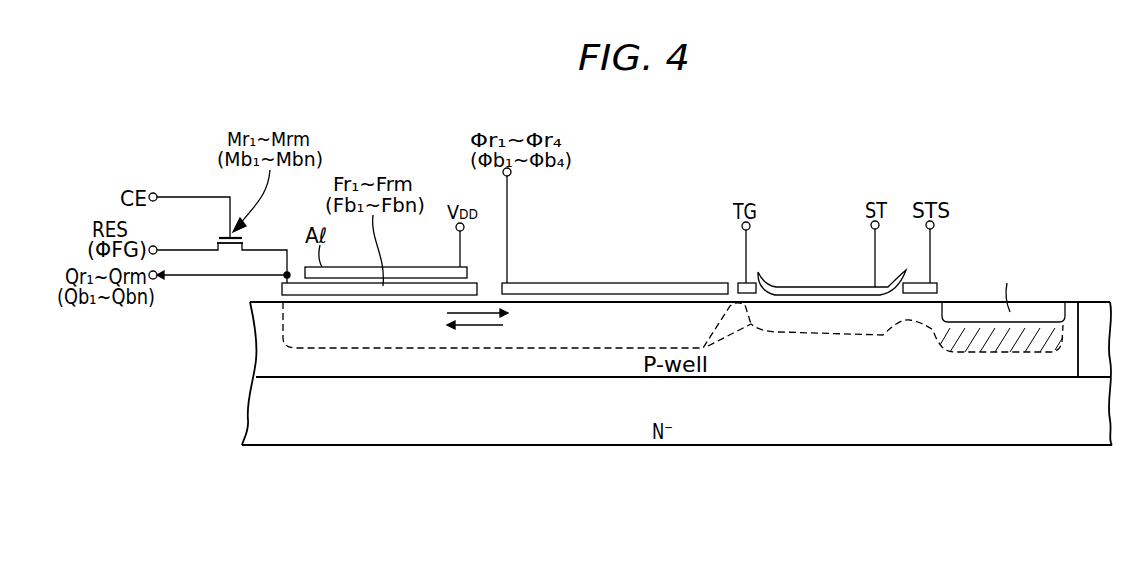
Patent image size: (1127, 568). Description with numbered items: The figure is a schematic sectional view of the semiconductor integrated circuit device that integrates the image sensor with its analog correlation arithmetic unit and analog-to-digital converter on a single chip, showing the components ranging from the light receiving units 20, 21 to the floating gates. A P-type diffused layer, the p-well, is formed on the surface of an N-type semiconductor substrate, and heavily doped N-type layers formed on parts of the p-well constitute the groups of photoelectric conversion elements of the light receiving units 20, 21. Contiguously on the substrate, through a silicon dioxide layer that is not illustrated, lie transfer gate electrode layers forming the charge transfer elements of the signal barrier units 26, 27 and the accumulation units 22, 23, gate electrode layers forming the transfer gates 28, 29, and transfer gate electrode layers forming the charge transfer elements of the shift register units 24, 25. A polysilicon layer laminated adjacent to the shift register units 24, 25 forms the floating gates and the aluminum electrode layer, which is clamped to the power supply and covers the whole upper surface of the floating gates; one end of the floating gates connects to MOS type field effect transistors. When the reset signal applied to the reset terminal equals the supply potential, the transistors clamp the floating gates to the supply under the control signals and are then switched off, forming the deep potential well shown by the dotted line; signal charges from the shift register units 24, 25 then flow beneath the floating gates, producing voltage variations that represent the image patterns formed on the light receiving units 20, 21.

The light receiving unit 20 is at (1022, 280).
The light receiving unit 21 is at (1051, 301).
The accumulation unit 22 is at (832, 263).
The accumulation unit 23 is at (802, 280).
The shift register unit 24 is at (615, 263).
The shift register unit 25 is at (611, 275).
The signal barrier unit 26 is at (960, 262).
The signal barrier unit 27 is at (935, 288).
The transfer gate 28 is at (709, 250).
The transfer gate 29 is at (743, 283).